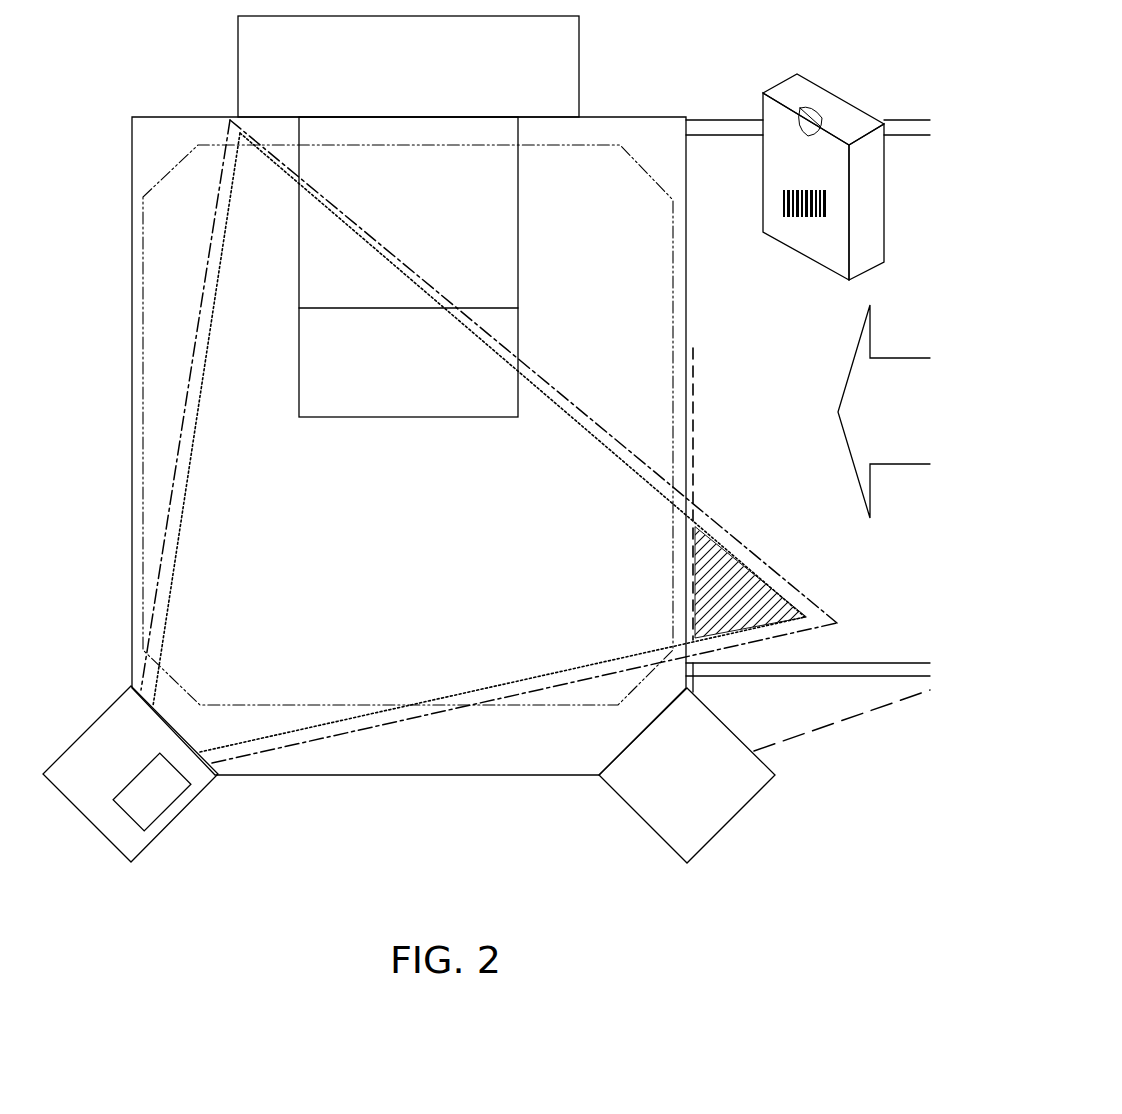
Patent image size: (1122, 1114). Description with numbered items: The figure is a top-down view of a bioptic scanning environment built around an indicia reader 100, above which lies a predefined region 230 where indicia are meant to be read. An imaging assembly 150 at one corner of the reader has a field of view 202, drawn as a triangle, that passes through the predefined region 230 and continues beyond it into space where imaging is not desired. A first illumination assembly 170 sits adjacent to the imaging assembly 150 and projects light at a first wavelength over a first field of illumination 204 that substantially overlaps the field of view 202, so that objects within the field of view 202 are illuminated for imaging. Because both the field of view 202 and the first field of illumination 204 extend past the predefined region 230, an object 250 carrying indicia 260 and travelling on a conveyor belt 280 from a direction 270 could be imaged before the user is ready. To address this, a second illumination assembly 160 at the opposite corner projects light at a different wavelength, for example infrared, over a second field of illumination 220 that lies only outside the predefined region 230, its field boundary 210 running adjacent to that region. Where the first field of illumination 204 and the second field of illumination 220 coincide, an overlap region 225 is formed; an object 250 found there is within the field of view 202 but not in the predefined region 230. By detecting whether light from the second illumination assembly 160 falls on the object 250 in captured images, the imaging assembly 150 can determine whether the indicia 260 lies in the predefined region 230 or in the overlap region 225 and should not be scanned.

The indicia reader 100 is at (132, 193).
The imaging assembly 150 is at (88, 727).
The second illumination assembly 160 is at (635, 738).
The first illumination assembly 170 is at (152, 792).
The field of view 202 is at (495, 686).
The first field of illumination 204 is at (193, 352).
The field boundary 210 is at (692, 440).
The second field of illumination 220 is at (808, 435).
The overlap region 225 is at (700, 583).
The predefined region 230 is at (143, 467).
The object 250 is at (777, 90).
The indicia 260 is at (785, 196).
The direction 270 is at (884, 411).
The conveyor belt 280 is at (783, 340).